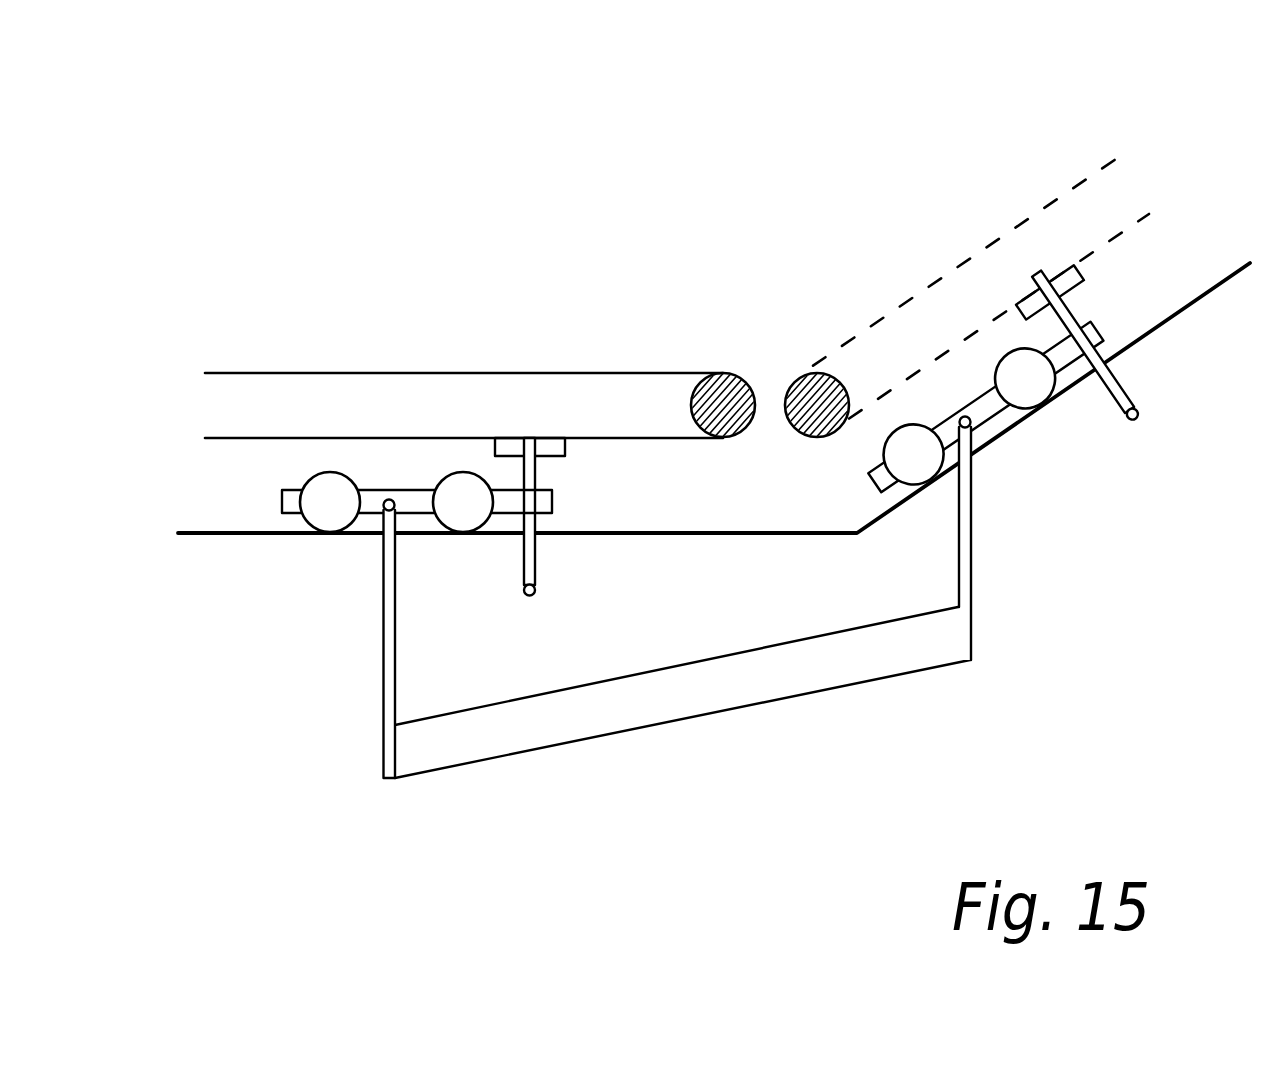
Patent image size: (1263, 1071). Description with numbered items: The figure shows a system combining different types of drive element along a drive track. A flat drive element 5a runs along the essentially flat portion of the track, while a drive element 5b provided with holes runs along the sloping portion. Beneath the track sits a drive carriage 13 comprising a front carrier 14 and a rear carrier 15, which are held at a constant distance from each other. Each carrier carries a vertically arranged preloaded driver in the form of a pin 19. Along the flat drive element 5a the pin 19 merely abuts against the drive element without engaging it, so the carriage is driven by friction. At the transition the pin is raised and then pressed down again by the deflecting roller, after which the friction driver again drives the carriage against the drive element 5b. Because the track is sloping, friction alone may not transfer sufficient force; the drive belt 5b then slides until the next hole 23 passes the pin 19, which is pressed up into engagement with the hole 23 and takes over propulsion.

The flat drive element 5a is at (483, 372).
The drive element provided with holes 5b is at (968, 264).
The drive carriage 13 is at (851, 660).
The front carrier 14 is at (872, 477).
The rear carrier 15 is at (281, 504).
The pin 19 is at (1074, 312).
The hole 23 is at (1118, 197).